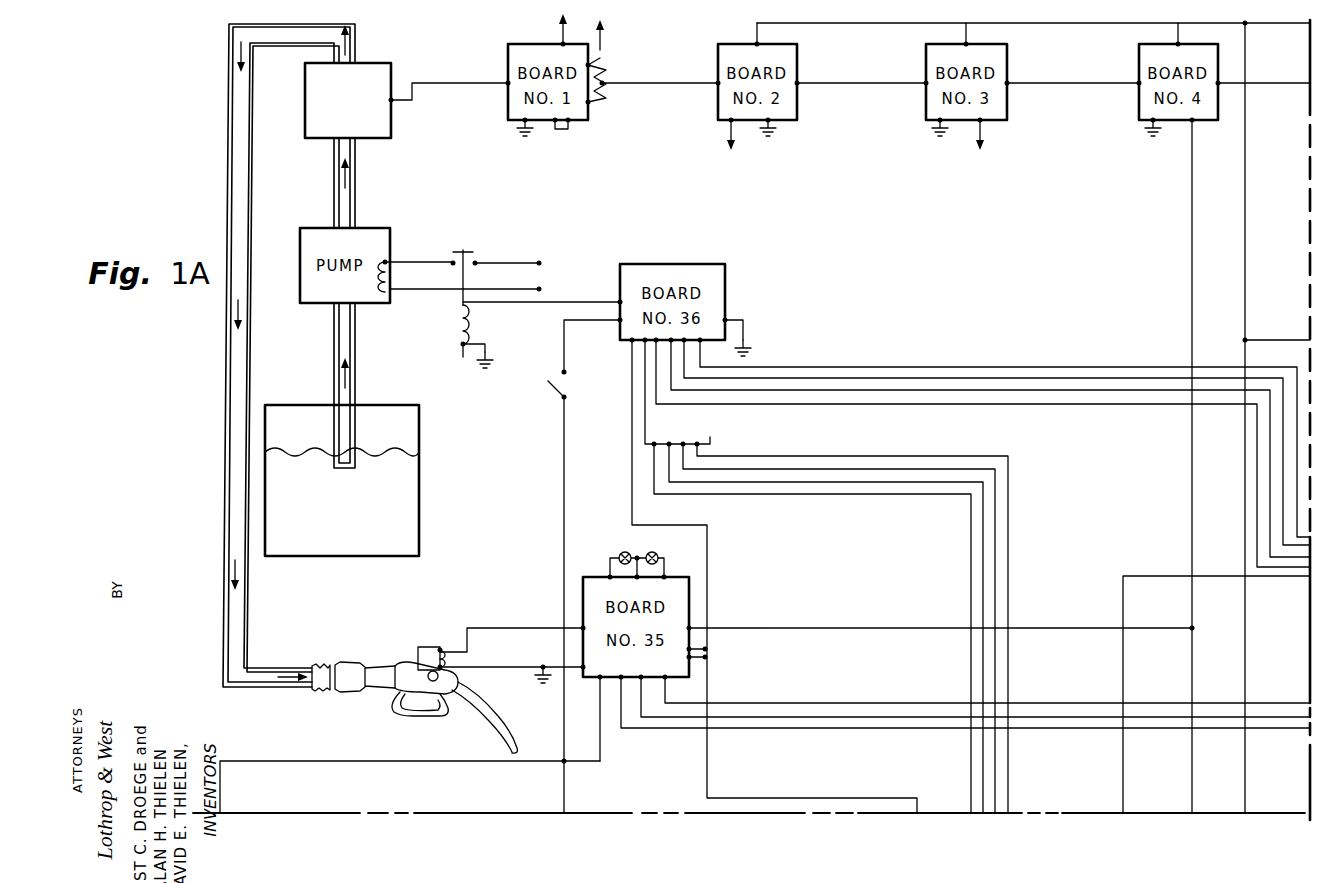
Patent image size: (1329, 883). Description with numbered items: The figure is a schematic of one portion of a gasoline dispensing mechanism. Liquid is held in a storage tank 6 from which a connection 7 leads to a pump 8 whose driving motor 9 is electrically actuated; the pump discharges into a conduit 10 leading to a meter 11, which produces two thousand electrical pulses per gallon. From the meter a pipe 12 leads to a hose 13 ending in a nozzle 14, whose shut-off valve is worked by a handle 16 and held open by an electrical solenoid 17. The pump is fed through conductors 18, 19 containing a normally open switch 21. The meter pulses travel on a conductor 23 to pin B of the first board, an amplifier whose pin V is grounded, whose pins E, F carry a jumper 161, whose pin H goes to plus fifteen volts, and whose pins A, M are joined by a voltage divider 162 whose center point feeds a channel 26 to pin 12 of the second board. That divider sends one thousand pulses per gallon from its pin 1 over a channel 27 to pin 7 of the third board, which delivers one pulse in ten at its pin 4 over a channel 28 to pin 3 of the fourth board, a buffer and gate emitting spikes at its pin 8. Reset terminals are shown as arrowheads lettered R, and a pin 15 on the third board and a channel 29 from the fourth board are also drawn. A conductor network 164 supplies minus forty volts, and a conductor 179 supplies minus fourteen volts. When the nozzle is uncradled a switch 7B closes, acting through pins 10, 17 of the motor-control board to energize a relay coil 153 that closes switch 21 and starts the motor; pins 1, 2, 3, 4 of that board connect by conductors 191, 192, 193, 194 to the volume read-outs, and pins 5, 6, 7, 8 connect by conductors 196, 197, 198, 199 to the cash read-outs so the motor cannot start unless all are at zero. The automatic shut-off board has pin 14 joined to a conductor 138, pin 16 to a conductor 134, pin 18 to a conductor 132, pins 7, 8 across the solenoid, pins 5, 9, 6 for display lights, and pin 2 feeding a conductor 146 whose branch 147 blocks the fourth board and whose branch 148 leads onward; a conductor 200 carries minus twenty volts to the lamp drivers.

The liquid storage tank 6 is at (418, 522).
The connection 7 is at (352, 398).
The pump 8 is at (1220, 82).
The driving motor 9 is at (766, 124).
The conduit 10 is at (353, 205).
The meter 11 is at (330, 133).
The pipe 12 is at (246, 207).
The hose 13 is at (353, 668).
The nozzle 14 is at (729, 125).
The board terminal 15 is at (975, 43).
The handle 16 is at (1194, 124).
The electrical solenoid 17 is at (618, 301).
The conductor 18 is at (755, 43).
The conductor 19 is at (500, 289).
The normally open switch 21 is at (466, 252).
The conductor 23 is at (441, 83).
The channel 26 is at (648, 84).
The channel 27 is at (862, 85).
The channel 28 is at (1070, 85).
The line 29 is at (1280, 85).
The conductor 132 is at (1263, 703).
The conductor 134 is at (1213, 716).
The conductor 138 is at (1278, 728).
The conductor 146 is at (810, 627).
The branch conductor 147 is at (1189, 305).
The branch 148 is at (1189, 672).
The relay coil 153 is at (468, 318).
The jumper 161 is at (561, 130).
The voltage divider 162 is at (605, 80).
The conductor network 164 is at (861, 24).
The conductor 179 is at (631, 395).
The conductor 191 is at (996, 405).
The conductor 192 is at (1062, 391).
The conductor 193 is at (1032, 377).
The conductor 194 is at (1075, 366).
The conductor 196 is at (970, 586).
The conductor 197 is at (981, 560).
The conductor 198 is at (996, 550).
The conductor 199 is at (1008, 585).
The conductor 200 is at (1281, 576).
The switch 7B is at (553, 393).
The pin 1 is at (798, 82).
The pin 2 is at (672, 343).
The pin 3 is at (1138, 82).
The pin 4 is at (1009, 82).
The pin 5 is at (655, 443).
The pin A is at (592, 66).
The pin B is at (506, 88).
The pin E is at (555, 123).
The pin F is at (570, 124).
The pin H is at (563, 42).
The pin M is at (590, 103).
The pin V is at (524, 122).
The reset terminal R is at (855, 163).